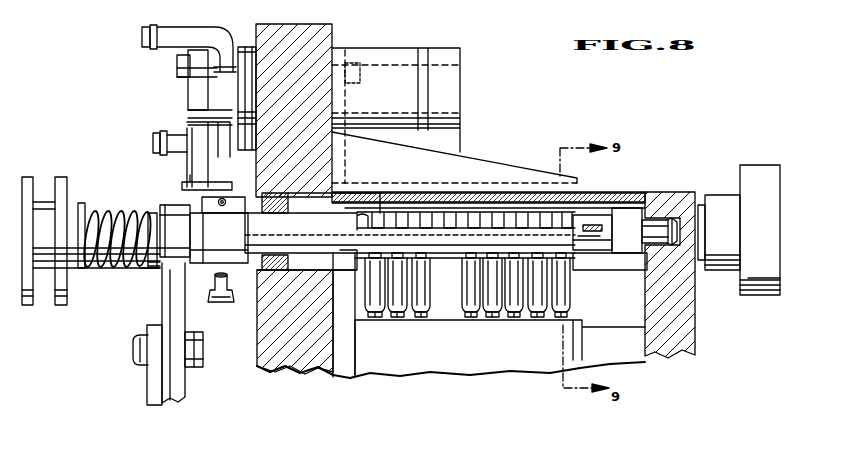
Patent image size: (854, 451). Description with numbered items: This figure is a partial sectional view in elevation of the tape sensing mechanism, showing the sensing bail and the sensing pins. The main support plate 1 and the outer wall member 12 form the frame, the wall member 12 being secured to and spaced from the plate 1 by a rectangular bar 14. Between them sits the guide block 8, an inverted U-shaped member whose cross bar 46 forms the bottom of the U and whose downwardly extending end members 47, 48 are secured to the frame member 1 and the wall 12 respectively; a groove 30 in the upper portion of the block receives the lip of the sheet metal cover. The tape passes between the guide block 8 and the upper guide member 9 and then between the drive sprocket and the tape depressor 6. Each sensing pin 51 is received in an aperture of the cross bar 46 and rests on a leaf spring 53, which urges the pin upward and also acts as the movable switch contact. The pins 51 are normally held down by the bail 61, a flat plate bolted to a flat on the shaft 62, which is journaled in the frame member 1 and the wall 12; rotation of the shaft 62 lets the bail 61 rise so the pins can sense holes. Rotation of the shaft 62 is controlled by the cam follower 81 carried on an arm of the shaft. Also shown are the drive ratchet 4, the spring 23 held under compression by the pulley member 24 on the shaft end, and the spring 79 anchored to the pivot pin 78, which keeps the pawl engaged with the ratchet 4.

The main support plate 1 is at (333, 26).
The drive ratchet 4 is at (186, 190).
The tape depressor 6 is at (755, 294).
The guide block 8 is at (599, 206).
The upper guide member 9 is at (466, 166).
The outer wall member 12 is at (675, 320).
The rectangular bar 14 is at (628, 347).
The spring 23 is at (112, 213).
The pulley member 24 is at (63, 178).
The groove 30 is at (584, 197).
The cross bar 46 is at (498, 200).
The end member 47 is at (345, 262).
The end member 48 is at (618, 262).
The sensing pin 51 is at (490, 282).
The leaf spring 53 is at (480, 318).
The bail 61 is at (438, 218).
The shaft 62 is at (332, 237).
The pivot pin 78 is at (200, 263).
The spring 79 is at (143, 268).
The cam follower 81 is at (160, 273).